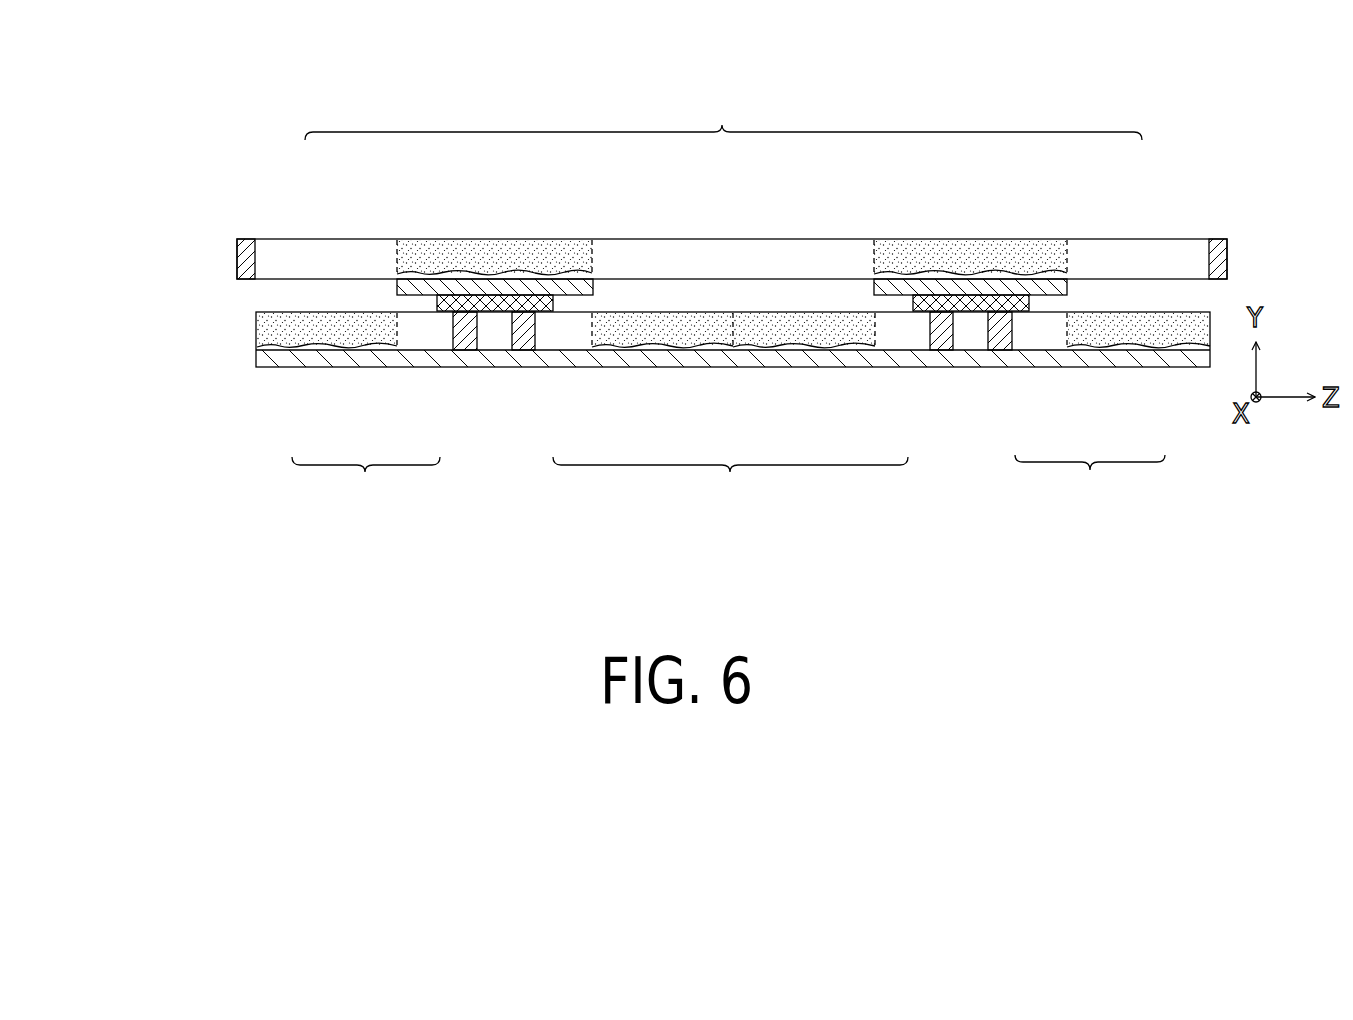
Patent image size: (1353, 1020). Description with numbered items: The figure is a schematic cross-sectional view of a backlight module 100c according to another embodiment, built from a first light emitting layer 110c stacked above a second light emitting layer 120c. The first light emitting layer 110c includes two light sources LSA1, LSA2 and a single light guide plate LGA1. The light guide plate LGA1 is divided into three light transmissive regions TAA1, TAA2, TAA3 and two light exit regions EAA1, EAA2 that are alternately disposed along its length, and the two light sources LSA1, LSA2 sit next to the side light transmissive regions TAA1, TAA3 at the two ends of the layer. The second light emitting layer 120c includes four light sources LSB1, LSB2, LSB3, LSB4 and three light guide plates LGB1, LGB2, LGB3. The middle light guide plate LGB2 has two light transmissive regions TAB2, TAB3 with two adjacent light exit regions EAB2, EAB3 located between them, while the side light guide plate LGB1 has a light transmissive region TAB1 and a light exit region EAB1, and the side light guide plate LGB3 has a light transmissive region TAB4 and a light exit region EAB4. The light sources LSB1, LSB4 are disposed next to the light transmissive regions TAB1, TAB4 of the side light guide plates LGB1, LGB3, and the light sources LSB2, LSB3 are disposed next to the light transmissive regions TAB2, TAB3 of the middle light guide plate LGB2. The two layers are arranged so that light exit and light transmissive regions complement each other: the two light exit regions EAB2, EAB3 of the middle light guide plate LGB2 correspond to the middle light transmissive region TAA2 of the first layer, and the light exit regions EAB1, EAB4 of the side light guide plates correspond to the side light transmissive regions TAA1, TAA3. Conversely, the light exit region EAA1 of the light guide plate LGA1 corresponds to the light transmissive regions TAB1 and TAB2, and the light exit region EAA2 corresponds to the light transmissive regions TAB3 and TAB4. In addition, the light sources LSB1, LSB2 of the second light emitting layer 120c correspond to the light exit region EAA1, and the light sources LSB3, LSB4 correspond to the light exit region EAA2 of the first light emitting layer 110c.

The backlight module 100c is at (126, 91).
The first light emitting layer 110c is at (188, 257).
The second light emitting layer 120c is at (188, 343).
The light source LSA1 is at (250, 239).
The light source LSA2 is at (1218, 239).
The light transmissive region TAA1 is at (351, 258).
The light transmissive region TAA2 is at (726, 258).
The light transmissive region TAA3 is at (1118, 258).
The light exit region EAA1 is at (493, 258).
The light exit region EAA2 is at (967, 258).
The light guide plate LGA1 is at (723, 117).
The light exit region EAB1 is at (325, 335).
The light exit region EAB2 is at (660, 333).
The light exit region EAB3 is at (792, 333).
The light exit region EAB4 is at (1128, 333).
The light transmissive region TAB1 is at (410, 343).
The light transmissive region TAB2 is at (585, 343).
The light transmissive region TAB3 is at (889, 343).
The light transmissive region TAB4 is at (1052, 340).
The light source LSB1 is at (463, 355).
The light source LSB2 is at (519, 352).
The light source LSB3 is at (940, 355).
The light source LSB4 is at (996, 352).
The light guide plate LGB1 is at (366, 483).
The light guide plate LGB2 is at (730, 483).
The light guide plate LGB3 is at (1090, 481).